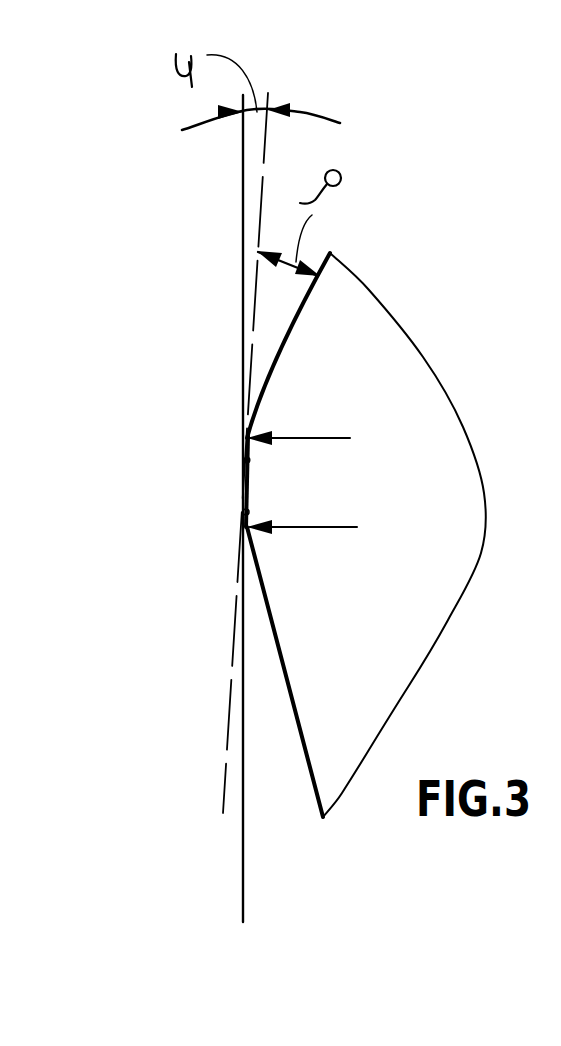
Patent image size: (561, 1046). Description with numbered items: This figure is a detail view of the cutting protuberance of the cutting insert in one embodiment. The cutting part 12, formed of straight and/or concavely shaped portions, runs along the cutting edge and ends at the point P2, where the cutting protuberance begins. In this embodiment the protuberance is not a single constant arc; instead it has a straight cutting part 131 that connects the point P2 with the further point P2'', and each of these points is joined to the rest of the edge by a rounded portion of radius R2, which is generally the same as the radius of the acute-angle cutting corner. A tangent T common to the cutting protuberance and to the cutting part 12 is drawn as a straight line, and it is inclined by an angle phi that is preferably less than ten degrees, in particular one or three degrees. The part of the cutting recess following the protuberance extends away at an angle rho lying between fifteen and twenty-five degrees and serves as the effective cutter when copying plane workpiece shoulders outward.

The cutting part 12 is at (303, 727).
The straight cutting part 131 is at (243, 477).
The tangent T is at (243, 188).
The point P2 is at (139, 403).
The radius R2 is at (330, 562).